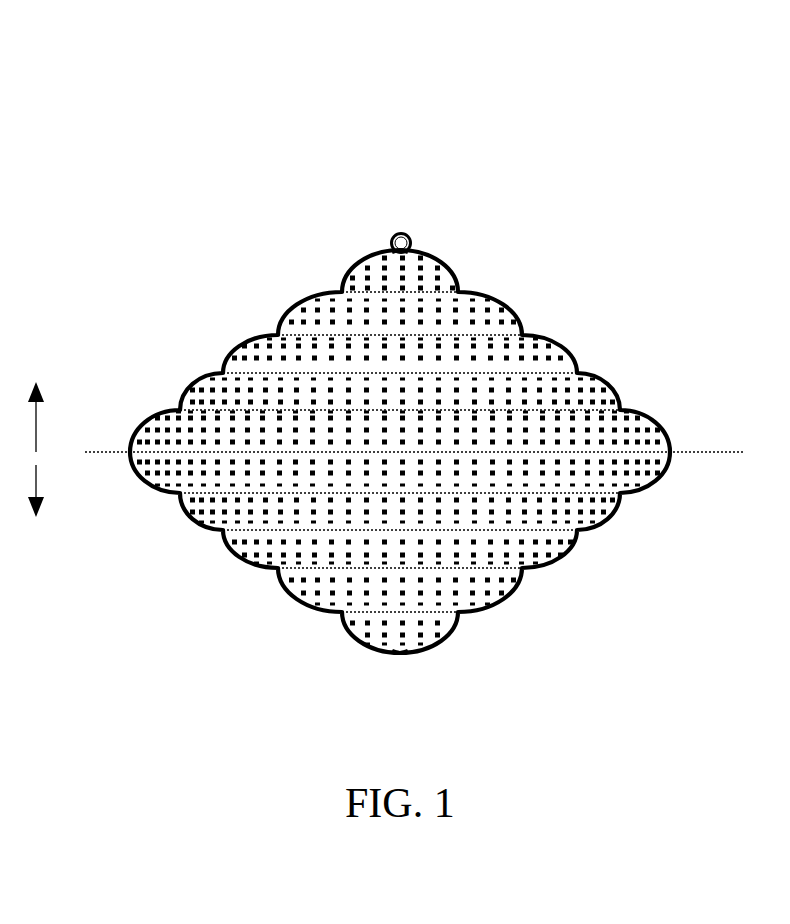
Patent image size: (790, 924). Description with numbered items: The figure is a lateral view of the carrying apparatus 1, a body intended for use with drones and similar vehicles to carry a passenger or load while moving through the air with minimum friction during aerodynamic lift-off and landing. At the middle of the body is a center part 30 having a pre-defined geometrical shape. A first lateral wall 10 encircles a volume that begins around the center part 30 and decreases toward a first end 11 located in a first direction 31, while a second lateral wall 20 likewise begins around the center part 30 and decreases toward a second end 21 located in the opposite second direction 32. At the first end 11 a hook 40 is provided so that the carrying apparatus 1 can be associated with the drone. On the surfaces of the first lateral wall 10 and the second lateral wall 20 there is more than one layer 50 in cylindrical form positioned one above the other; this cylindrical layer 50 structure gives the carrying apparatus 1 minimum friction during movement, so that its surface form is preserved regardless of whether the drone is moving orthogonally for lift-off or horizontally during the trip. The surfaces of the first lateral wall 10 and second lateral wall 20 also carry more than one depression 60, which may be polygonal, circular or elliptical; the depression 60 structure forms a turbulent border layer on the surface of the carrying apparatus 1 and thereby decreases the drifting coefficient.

The carrying apparatus 1 is at (147, 137).
The first lateral wall 10 is at (400, 335).
The first end 11 is at (454, 229).
The second lateral wall 20 is at (400, 596).
The second end 21 is at (442, 695).
The center part 30 is at (408, 413).
The first direction 31 is at (38, 403).
The second direction 32 is at (38, 510).
The hook 40 is at (445, 199).
The layer 50 is at (506, 571).
The depression 60 is at (341, 283).